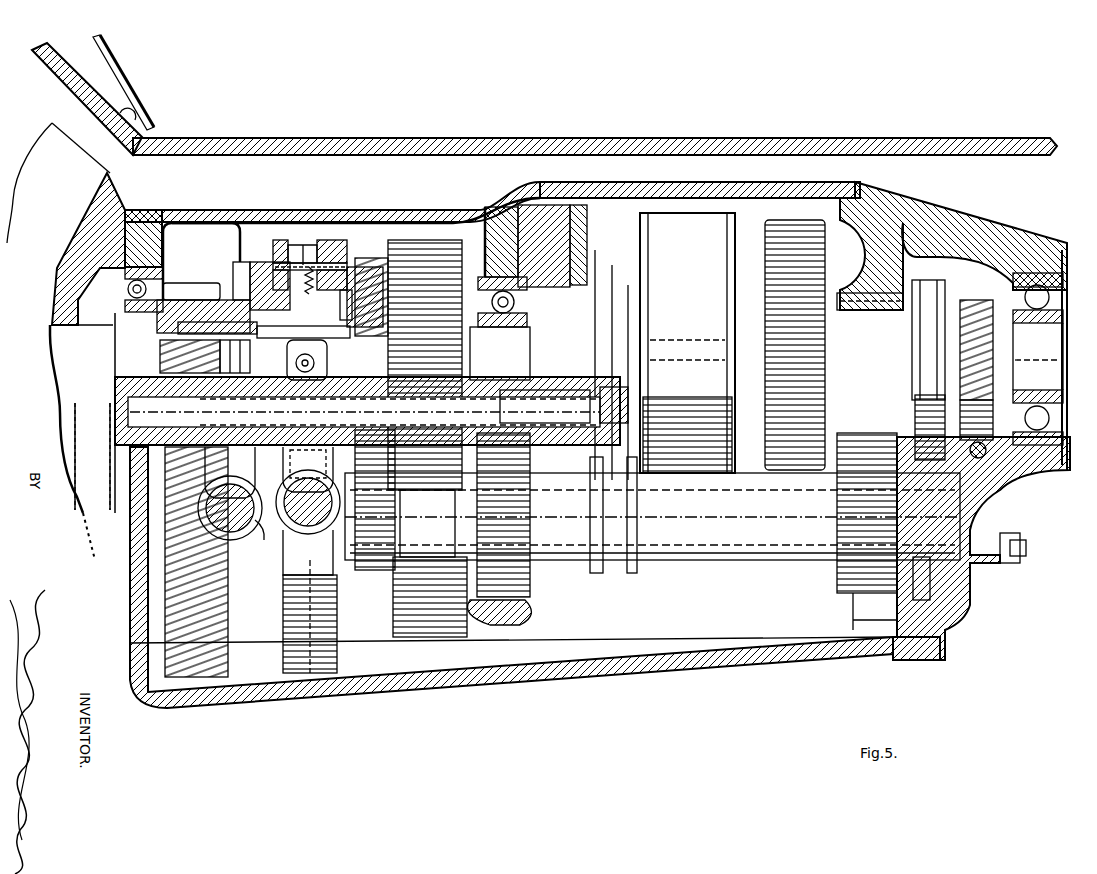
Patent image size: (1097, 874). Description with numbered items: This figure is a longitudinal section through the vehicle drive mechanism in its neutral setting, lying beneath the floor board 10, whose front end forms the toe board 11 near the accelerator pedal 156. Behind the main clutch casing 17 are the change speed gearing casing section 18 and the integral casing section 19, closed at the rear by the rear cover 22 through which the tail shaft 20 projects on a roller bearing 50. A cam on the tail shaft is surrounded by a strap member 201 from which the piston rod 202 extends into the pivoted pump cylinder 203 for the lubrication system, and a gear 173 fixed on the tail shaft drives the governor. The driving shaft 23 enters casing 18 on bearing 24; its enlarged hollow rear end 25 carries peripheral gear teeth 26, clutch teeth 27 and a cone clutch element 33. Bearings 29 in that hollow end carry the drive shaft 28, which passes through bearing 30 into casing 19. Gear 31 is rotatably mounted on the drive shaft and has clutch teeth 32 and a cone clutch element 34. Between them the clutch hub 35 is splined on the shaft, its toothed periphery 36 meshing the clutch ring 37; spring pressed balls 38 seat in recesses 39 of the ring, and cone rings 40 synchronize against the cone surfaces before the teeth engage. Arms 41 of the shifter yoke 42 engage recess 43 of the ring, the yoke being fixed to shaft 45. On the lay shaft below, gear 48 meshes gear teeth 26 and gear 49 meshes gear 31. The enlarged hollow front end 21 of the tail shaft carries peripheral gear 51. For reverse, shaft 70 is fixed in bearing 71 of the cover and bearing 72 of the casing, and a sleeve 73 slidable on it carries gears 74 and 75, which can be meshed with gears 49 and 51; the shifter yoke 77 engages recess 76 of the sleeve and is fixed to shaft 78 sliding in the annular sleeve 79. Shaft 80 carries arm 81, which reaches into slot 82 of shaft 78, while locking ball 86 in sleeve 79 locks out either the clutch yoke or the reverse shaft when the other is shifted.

The floor board 10 is at (366, 137).
The toe board 11 is at (44, 68).
The accelerator pedal 156 is at (133, 90).
The main clutch containing casing 17 is at (75, 161).
The change speed gearing casing section 18 is at (172, 210).
The casing section 19 is at (665, 184).
The rear cover 22 is at (960, 250).
The tail shaft 20 is at (1048, 341).
The roller bearing 50 is at (858, 313).
The strap member 201 is at (921, 285).
The piston rod 202 is at (907, 435).
The gear 173 is at (970, 302).
The shaft 70 is at (970, 508).
The cylinder 203 is at (972, 585).
The bearing 71 is at (912, 585).
The driving shaft 23 is at (66, 300).
The bearing 24 is at (161, 270).
The peripheral gear teeth 26 is at (180, 290).
The rear end of driving shaft 25 is at (205, 288).
The clutch teeth 27 is at (240, 262).
The cone clutch element 33 is at (255, 266).
The clutch ring 37 is at (277, 238).
The recess 43 is at (313, 238).
The cone rings 40 is at (332, 241).
The spring pressed balls 38 is at (306, 245).
The recesses 39 is at (305, 262).
The toothed periphery 36 is at (355, 266).
The cone clutch element 34 is at (350, 290).
The clutch teeth 32 is at (375, 258).
The gear 31 is at (426, 258).
The gear 49 is at (413, 637).
The bearing 30 is at (480, 285).
The enlarged hollow front end 21 is at (748, 245).
The peripheral gear 51 is at (790, 228).
The shaft 78 is at (210, 413).
The shifter yoke 77 is at (623, 430).
The bearings 29 is at (195, 333).
The drive shaft 28 is at (217, 337).
The clutch hub 35 is at (265, 338).
The arms 41 is at (316, 365).
The annular sleeve 79 is at (165, 466).
The gear 48 is at (228, 660).
The slot 82 is at (230, 493).
The shaft 80 is at (244, 528).
The arm 81 is at (264, 531).
The locking ball 86 is at (308, 490).
The shaft 45 is at (305, 530).
The shifter yoke 42 is at (300, 670).
The bearing 72 is at (366, 550).
The sleeve 73 is at (695, 556).
The gear 74 is at (532, 575).
The recess 76 is at (606, 573).
The gear 75 is at (838, 570).